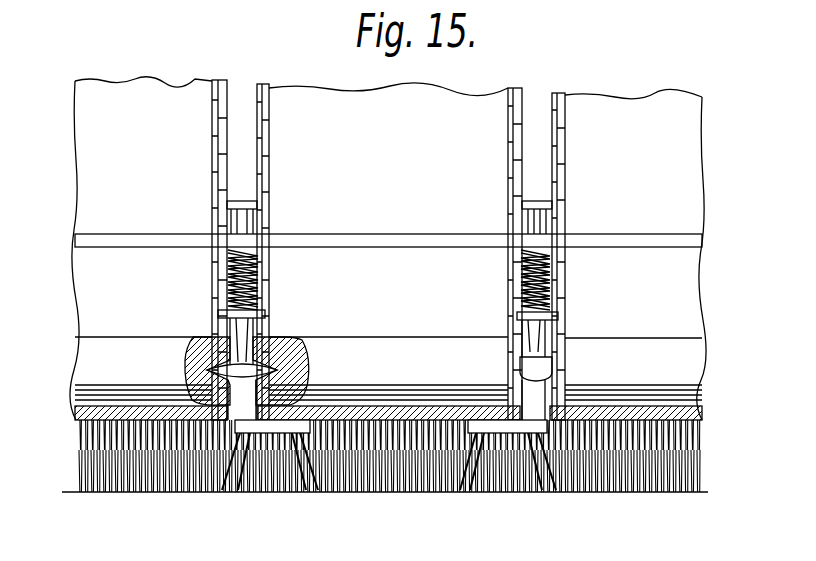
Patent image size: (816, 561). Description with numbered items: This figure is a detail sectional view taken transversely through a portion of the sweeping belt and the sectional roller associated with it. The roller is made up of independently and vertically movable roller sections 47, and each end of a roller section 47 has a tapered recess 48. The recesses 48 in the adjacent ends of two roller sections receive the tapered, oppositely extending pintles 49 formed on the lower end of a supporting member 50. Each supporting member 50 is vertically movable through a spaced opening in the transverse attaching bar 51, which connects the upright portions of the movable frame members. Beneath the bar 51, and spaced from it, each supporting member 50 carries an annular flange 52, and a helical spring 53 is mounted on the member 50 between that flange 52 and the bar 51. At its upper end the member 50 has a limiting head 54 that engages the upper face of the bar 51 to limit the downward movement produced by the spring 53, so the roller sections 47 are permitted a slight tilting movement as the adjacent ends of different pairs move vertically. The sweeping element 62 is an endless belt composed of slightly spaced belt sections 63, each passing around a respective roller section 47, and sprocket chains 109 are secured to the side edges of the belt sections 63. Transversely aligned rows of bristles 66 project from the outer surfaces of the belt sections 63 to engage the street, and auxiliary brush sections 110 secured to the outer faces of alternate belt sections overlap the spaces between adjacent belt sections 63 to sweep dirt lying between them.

The roller section 47 is at (98, 342).
The tapered recess 48 is at (177, 378).
The pintle 49 is at (312, 358).
The supporting member 50 is at (233, 357).
The transverse attaching bar 51 is at (390, 238).
The annular flange 52 is at (268, 314).
The helical spring 53 is at (265, 265).
The limiting head 54 is at (247, 203).
The sweeping element 62 is at (703, 412).
The belt section 63 is at (388, 125).
The bristles 66 is at (153, 490).
The sprocket chain 109 is at (507, 143).
The auxiliary brush section 110 is at (246, 493).